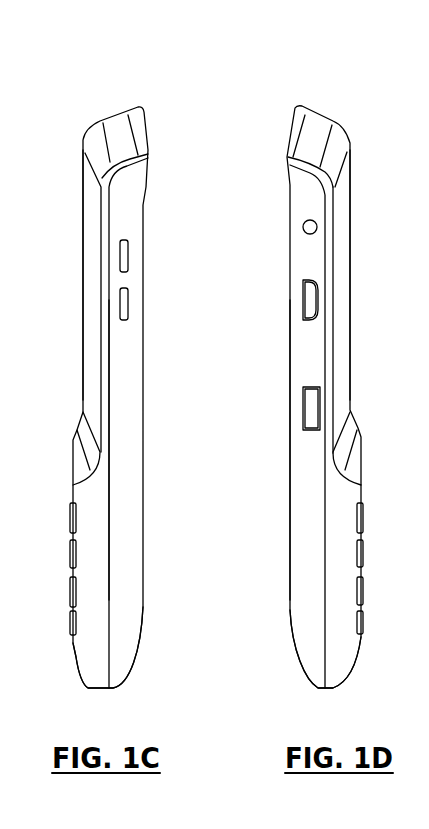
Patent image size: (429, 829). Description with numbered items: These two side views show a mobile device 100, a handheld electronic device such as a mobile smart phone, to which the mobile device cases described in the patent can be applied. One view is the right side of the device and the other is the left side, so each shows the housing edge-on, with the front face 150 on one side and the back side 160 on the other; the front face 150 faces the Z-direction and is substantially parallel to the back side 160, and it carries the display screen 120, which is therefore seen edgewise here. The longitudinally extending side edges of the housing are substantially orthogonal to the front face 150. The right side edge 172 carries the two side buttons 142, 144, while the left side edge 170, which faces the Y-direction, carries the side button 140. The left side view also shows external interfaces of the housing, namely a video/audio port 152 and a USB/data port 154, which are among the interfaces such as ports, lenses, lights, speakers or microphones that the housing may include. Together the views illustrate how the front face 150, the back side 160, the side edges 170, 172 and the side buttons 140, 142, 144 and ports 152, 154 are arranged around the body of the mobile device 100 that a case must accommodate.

In FIG. 1C, the mobile device 100 is at (128, 73).
In FIG. 1D, the mobile device 100 is at (320, 93).
In FIG. 1C, the display screen 120 is at (89, 280).
In FIG. 1D, the display screen 120 is at (350, 330).
In FIG. 1D, the side button 140 is at (310, 407).
In FIG. 1C, the side button 142 is at (128, 252).
In FIG. 1C, the side button 144 is at (128, 302).
In FIG. 1C, the front face 150 is at (70, 448).
In FIG. 1D, the front face 150 is at (362, 447).
In FIG. 1C, the video/audio port 152 is at (12, 172).
In FIG. 1D, the video/audio port 152 is at (303, 225).
In FIG. 1C, the USB/data port 154 is at (18, 339).
In FIG. 1D, the USB/data port 154 is at (303, 302).
In FIG. 1C, the back side 160 is at (143, 515).
In FIG. 1D, the back side 160 is at (290, 572).
In FIG. 1C, the left side edge 170 is at (4, 520).
In FIG. 1D, the left side edge 170 is at (302, 477).
In FIG. 1C, the right side edge 172 is at (128, 462).